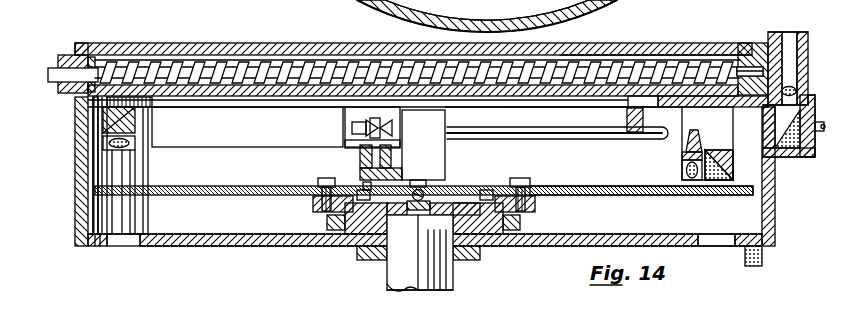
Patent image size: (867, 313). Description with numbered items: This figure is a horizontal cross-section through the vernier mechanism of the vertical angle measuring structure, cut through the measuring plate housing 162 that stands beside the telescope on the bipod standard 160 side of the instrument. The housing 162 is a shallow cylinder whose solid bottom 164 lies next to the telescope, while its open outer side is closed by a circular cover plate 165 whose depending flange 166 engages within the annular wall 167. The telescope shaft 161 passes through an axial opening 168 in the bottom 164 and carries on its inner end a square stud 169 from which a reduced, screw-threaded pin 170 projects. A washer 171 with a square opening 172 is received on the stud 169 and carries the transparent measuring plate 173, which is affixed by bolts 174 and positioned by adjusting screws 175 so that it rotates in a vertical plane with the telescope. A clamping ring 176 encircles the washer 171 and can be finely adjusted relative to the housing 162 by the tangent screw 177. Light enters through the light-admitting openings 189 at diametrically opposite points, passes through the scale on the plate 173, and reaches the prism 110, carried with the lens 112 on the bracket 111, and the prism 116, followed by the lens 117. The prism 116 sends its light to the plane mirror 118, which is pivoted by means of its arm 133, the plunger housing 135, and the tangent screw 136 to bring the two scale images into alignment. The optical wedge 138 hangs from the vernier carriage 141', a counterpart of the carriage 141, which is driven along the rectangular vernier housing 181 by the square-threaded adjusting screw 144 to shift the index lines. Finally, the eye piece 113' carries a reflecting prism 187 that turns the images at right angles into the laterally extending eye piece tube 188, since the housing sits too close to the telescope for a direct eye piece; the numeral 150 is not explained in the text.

The prism 110 is at (136, 148).
The bracket 111 is at (140, 120).
The lens 112 is at (100, 157).
The eye piece 113' is at (794, 140).
The prism 116 is at (730, 160).
The lens 117 is at (684, 167).
The plane mirror 118 is at (409, 111).
The arm 133 is at (356, 115).
The housing 135 is at (300, 121).
The tangent screw 136 is at (512, 131).
The optical wedge 138 is at (635, 134).
The vernier carriage 141 is at (501, 304).
The vernier carriage 141' is at (711, 56).
The adjusting screw 144 is at (284, 78).
The drive assembly 150 is at (213, 304).
The bipod standard 160 is at (306, 304).
The shaft 161 is at (395, 274).
The measuring plate housing 162 is at (198, 238).
The bottom 164 is at (270, 242).
The cover plate 165 is at (190, 97).
The flange 166 is at (104, 56).
The annular wall 167 is at (78, 200).
The axial opening 168 is at (476, 247).
The stud 169 is at (426, 232).
The screw-threaded pin 170 is at (414, 192).
The washer 171 is at (528, 228).
The square opening 172 is at (492, 174).
The measuring plate 173 is at (641, 174).
The bolts 174 is at (538, 166).
The adjusting screws 175 is at (338, 190).
The clamping ring 176 is at (332, 221).
The tangent screw 177 is at (763, 254).
The vernier housing 181 is at (583, 60).
The prism 187 is at (775, 130).
The eye piece tube 188 is at (778, 32).
The light-admitting openings 189 is at (131, 241).